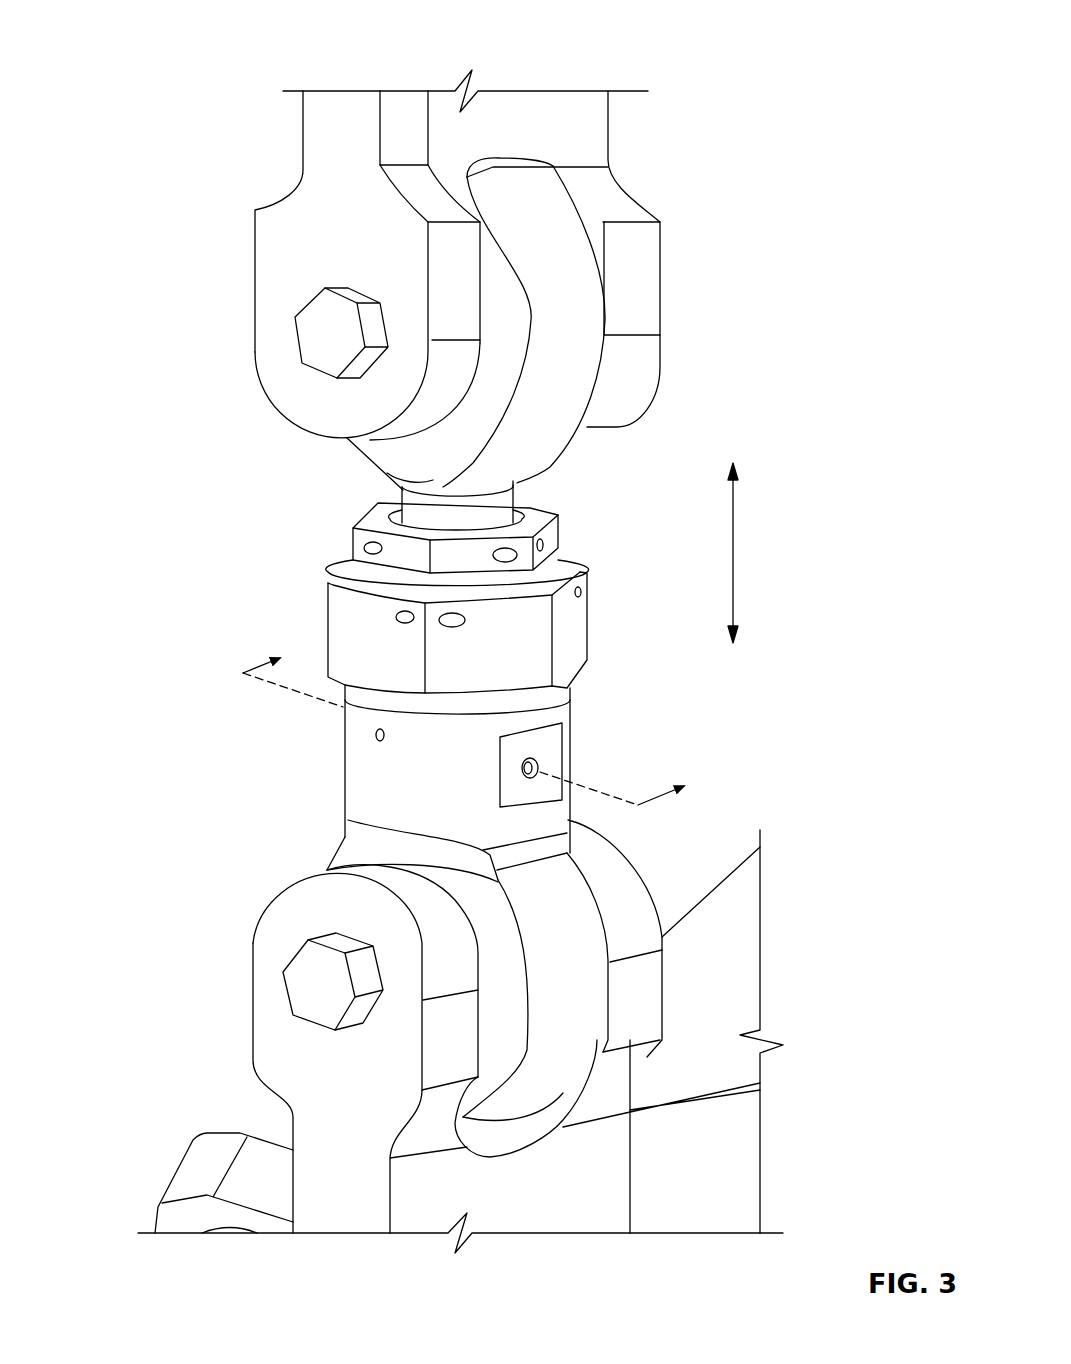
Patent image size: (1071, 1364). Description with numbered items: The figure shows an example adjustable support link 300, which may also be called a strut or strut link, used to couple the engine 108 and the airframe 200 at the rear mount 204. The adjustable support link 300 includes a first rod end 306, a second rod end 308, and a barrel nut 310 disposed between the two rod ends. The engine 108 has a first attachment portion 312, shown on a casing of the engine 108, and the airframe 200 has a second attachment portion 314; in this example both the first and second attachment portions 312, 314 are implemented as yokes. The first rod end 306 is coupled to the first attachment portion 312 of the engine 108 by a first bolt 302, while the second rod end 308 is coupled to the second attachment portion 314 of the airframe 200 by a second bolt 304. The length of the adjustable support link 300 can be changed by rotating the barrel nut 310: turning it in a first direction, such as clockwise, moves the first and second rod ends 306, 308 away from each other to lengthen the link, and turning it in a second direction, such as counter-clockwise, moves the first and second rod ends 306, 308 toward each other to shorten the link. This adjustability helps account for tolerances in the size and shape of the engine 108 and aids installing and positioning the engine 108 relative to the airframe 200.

The rear mount 204 is at (120, 50).
The engine 108 is at (590, 123).
The first attachment portion 312 is at (300, 222).
The first bolt 302 is at (327, 328).
The adjustable support link 300 is at (168, 558).
The first rod end 306 is at (402, 460).
The barrel nut 310 is at (370, 532).
The second rod end 308 is at (377, 780).
The second attachment portion 314 is at (275, 1025).
The second bolt 304 is at (302, 972).
The airframe 200 is at (533, 1200).